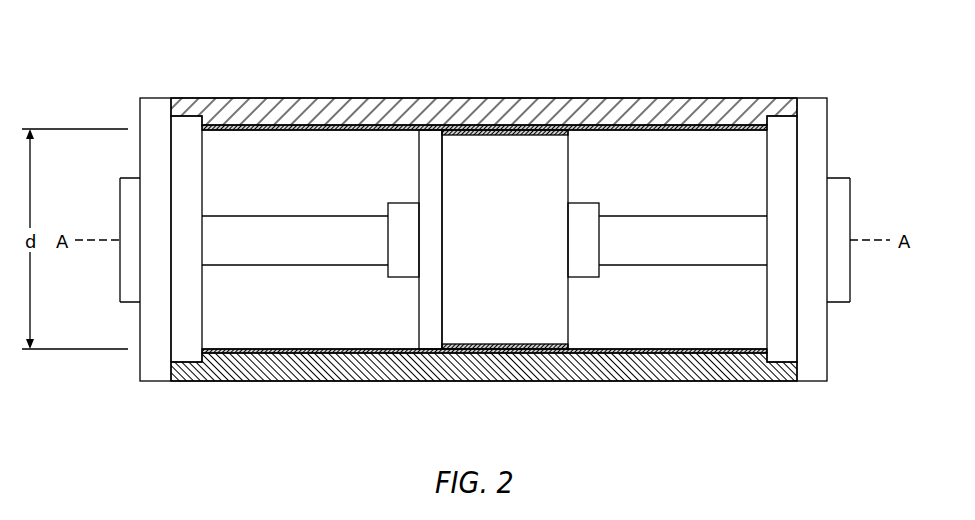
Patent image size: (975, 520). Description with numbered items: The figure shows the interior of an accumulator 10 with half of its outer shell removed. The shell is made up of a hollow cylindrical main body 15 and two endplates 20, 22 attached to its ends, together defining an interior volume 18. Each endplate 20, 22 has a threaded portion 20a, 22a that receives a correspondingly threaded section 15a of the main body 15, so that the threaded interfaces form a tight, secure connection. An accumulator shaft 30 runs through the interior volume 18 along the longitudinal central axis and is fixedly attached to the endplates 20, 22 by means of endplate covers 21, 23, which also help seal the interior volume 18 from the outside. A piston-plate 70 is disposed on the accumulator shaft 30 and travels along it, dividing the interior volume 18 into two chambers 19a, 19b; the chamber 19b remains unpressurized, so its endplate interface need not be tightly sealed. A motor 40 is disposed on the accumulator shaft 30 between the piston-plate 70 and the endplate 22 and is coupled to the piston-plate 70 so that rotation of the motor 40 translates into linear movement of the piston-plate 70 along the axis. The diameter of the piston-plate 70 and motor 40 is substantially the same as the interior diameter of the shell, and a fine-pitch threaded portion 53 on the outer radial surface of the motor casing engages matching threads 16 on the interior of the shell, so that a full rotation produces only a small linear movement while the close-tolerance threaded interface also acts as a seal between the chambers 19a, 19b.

The accumulator 10 is at (112, 67).
The main body 15 is at (522, 98).
The sections of the main body 15a is at (182, 98).
The matching threads 16 is at (262, 128).
The interior volume 18 is at (342, 148).
The chamber 19a is at (335, 330).
The chamber 19b is at (662, 330).
The endplate 20 is at (155, 381).
The threaded portion 20a is at (203, 280).
The endplate cover 21 is at (120, 267).
The endplate 22 is at (813, 381).
The threaded portion 22a is at (767, 278).
The endplate cover 23 is at (850, 202).
The accumulator shaft 30 is at (630, 214).
The motor 40 is at (570, 328).
The threaded portion 53 is at (458, 134).
The piston-plate 70 is at (419, 332).